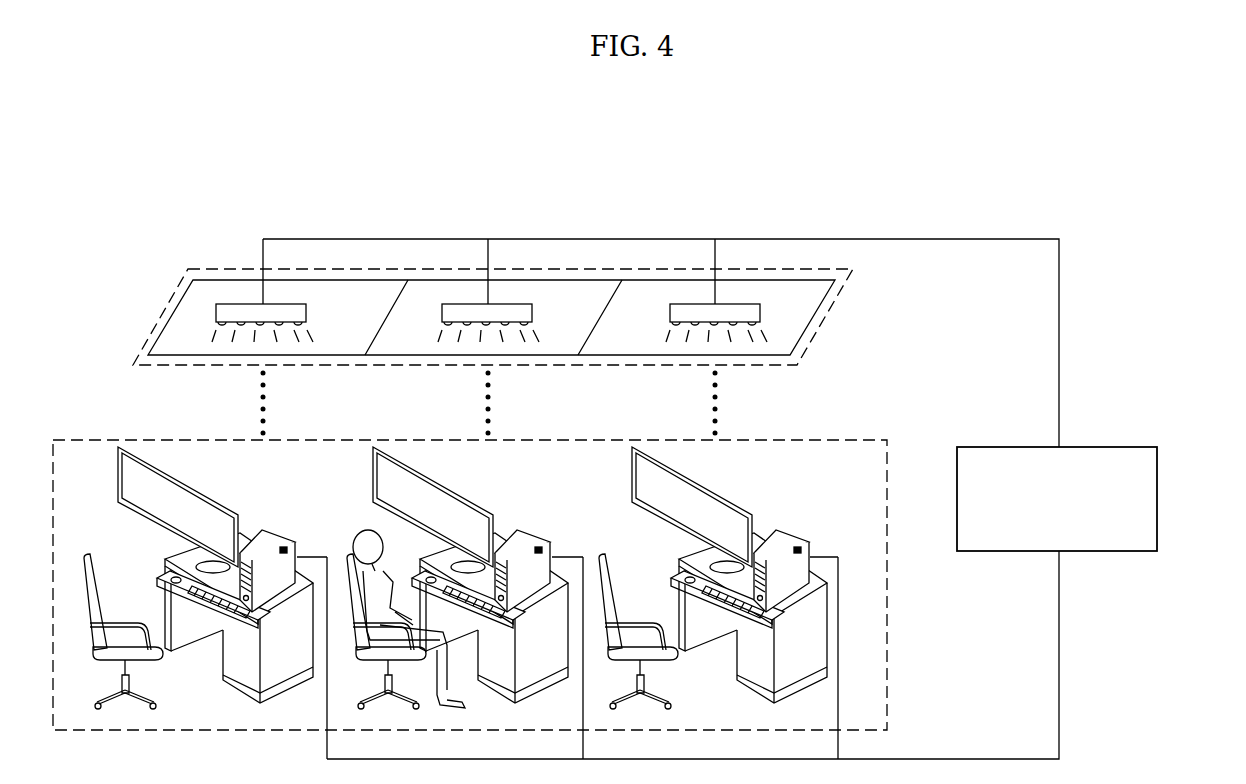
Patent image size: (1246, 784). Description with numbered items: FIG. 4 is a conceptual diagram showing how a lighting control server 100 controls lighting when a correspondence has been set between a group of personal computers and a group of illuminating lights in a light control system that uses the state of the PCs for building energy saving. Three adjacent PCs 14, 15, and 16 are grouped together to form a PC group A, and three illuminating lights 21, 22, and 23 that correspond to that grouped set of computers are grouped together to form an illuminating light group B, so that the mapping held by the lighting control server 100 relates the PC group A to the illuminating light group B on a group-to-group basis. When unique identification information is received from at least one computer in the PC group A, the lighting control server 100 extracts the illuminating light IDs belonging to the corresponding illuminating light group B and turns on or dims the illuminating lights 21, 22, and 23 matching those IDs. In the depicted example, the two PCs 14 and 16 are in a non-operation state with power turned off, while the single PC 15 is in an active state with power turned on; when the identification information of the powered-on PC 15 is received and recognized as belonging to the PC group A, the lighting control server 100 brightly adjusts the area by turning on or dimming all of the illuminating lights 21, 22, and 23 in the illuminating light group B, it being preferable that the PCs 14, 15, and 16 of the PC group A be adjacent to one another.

The PC 14 is at (262, 535).
The PC 15 is at (517, 535).
The PC 16 is at (775, 535).
The illuminating light 21 is at (276, 303).
The illuminating light 22 is at (502, 303).
The illuminating light 23 is at (730, 303).
The lighting control server 100 is at (1157, 497).
The PC group A is at (887, 585).
The illuminating light group B is at (827, 318).